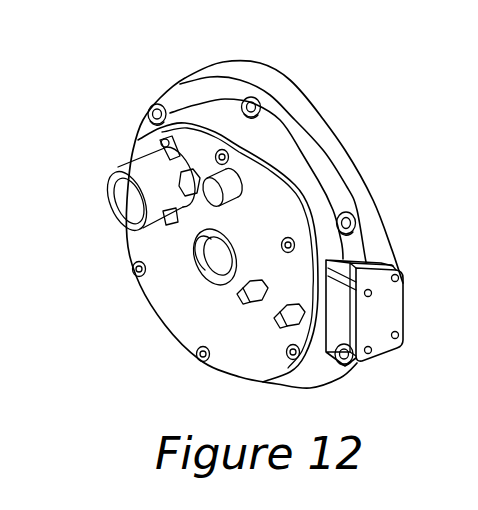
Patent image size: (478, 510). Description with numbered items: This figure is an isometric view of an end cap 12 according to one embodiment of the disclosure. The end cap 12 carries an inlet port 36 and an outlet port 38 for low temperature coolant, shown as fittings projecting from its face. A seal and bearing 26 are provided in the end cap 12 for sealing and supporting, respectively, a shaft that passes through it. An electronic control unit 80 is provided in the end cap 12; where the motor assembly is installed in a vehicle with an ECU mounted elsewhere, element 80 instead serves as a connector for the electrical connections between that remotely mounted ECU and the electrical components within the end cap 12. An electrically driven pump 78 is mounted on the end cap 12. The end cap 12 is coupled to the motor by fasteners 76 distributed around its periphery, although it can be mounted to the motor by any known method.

The end cap 12 is at (340, 99).
The seal and bearing 26 is at (194, 243).
The inlet port 36 is at (247, 304).
The outlet port 38 is at (280, 326).
The fasteners 76 is at (148, 110).
The electrically driven pump 78 is at (120, 198).
The electronic control unit 80 is at (392, 312).